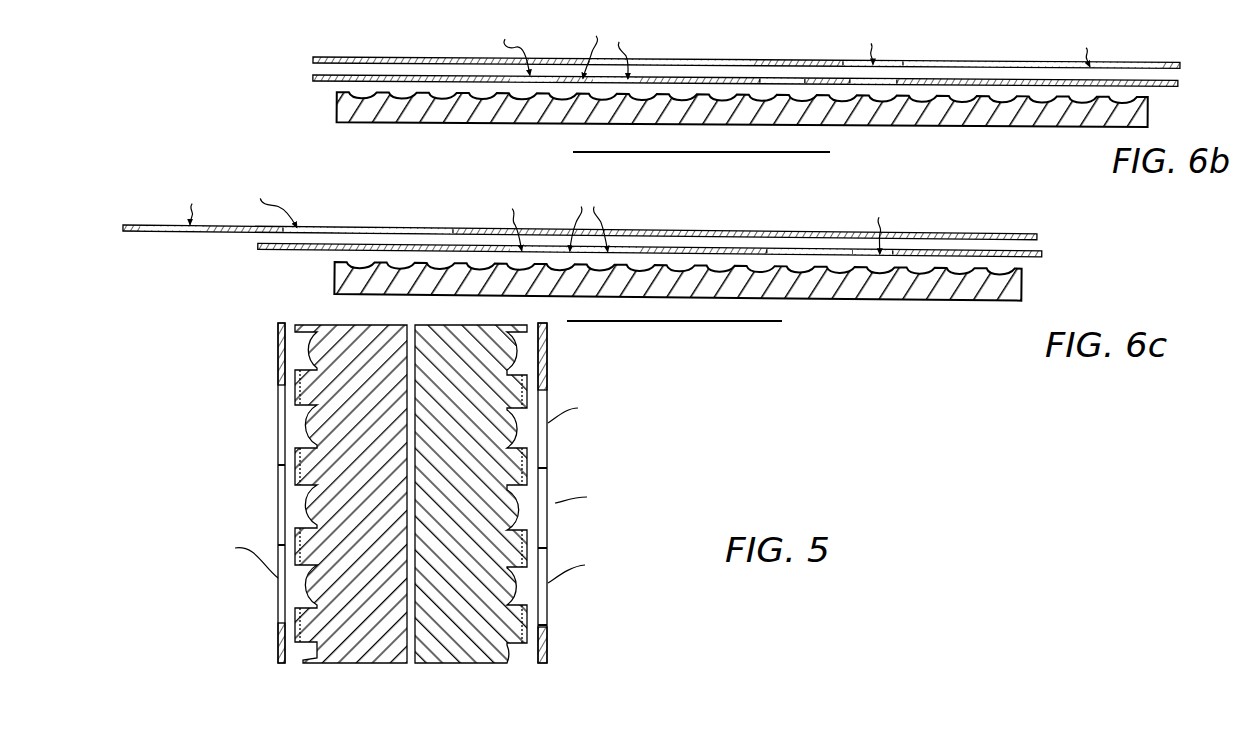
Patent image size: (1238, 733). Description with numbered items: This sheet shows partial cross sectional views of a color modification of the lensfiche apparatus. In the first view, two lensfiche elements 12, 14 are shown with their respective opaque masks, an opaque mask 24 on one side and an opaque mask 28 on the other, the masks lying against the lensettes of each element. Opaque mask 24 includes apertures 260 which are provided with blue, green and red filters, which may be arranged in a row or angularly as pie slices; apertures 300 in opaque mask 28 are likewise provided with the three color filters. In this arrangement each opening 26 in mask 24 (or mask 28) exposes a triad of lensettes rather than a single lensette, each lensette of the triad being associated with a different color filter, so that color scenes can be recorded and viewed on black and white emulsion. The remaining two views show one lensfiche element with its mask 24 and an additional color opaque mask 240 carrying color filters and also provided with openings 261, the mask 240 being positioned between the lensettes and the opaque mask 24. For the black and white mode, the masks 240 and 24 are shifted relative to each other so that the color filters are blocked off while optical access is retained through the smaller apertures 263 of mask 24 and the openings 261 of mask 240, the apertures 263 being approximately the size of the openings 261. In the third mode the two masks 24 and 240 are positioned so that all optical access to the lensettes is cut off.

In FIG. 5, the lensfiche element 12 is at (303, 661).
In FIG. 5, the lensfiche element 14 is at (515, 660).
In FIG. 6B, the opaque mask 24 is at (717, 62).
In FIG. 6C, the opaque mask 24 is at (747, 232).
In FIG. 5, the opaque mask 24 is at (278, 350).
In FIG. 6B, the openings 26 is at (1108, 64).
In FIG. 6C, the openings 26 is at (358, 226).
In FIG. 5, the opaque mask 28 is at (548, 372).
In FIG. 6B, the color opaque mask 240 is at (775, 78).
In FIG. 6C, the color opaque mask 240 is at (765, 250).
In FIG. 5, the apertures 260 is at (220, 493).
In FIG. 6B, the openings 261 is at (888, 80).
In FIG. 6C, the openings 261 is at (862, 250).
In FIG. 6B, the apertures 263 is at (887, 62).
In FIG. 6C, the apertures 263 is at (152, 225).
In FIG. 5, the apertures 300 is at (599, 493).